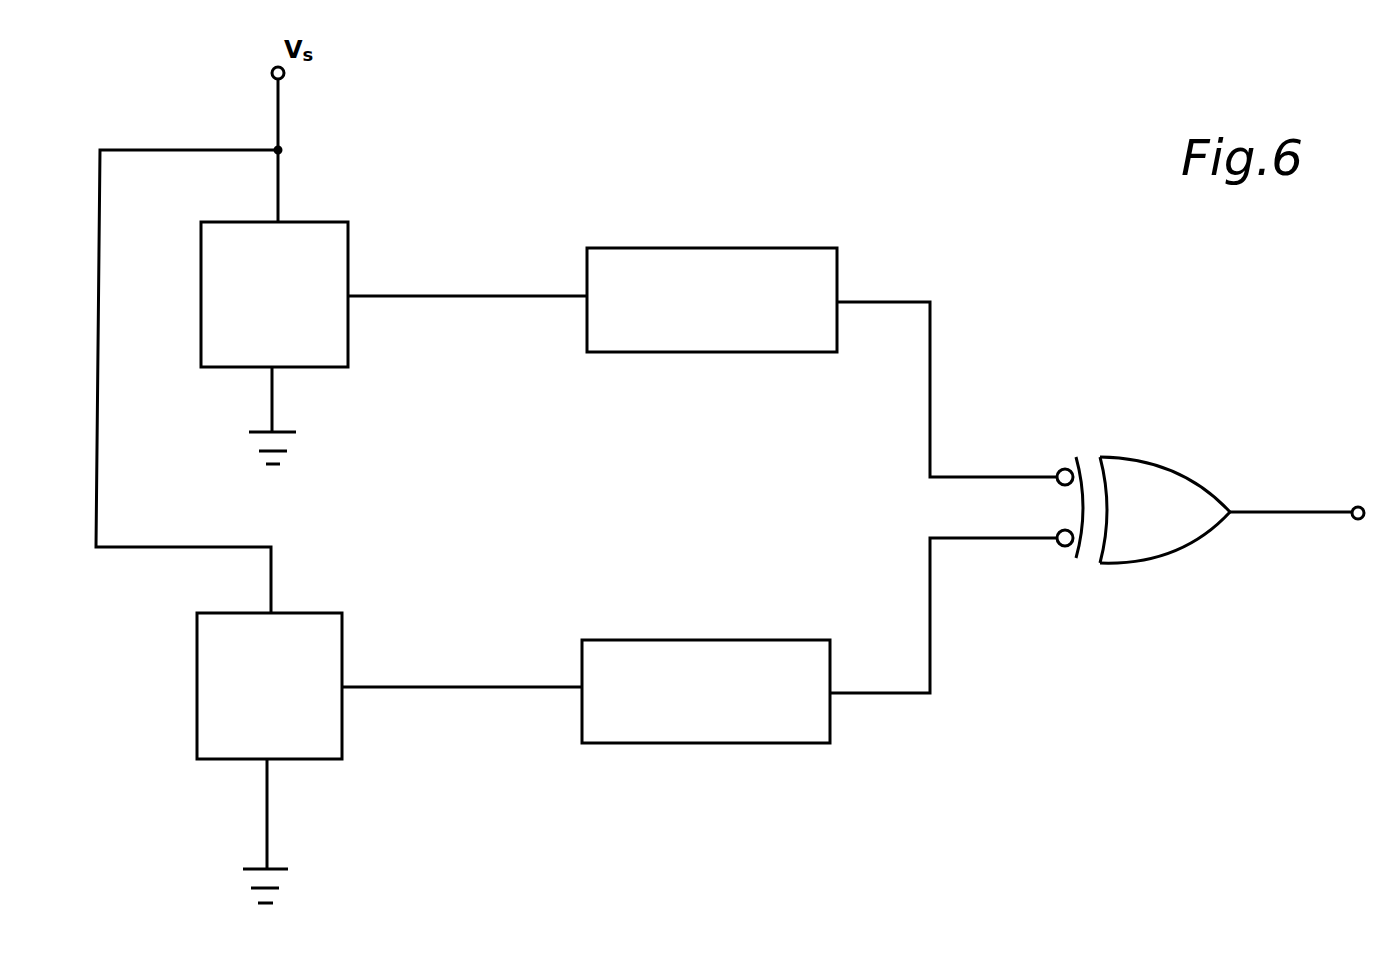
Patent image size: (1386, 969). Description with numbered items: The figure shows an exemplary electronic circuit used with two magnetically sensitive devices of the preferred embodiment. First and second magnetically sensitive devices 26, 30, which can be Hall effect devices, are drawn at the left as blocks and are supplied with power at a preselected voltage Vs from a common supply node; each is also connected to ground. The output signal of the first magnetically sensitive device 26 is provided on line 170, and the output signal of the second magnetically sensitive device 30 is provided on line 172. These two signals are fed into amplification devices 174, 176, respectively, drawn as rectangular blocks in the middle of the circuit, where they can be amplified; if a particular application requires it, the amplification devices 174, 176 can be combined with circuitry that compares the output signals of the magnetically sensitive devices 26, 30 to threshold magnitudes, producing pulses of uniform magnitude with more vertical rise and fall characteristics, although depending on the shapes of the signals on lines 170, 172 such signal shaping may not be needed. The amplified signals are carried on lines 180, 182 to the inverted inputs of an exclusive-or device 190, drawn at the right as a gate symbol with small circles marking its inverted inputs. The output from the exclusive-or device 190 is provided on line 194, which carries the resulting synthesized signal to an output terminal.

The first magnetically sensitive device 26 is at (317, 359).
The second magnetically sensitive device 30 is at (310, 628).
The line 170 is at (399, 296).
The line 172 is at (392, 687).
The amplification device 174 is at (792, 260).
The amplification device 176 is at (694, 722).
The line 180 is at (930, 405).
The line 182 is at (957, 538).
The exclusive-or device 190 is at (1147, 458).
The line 194 is at (1252, 513).